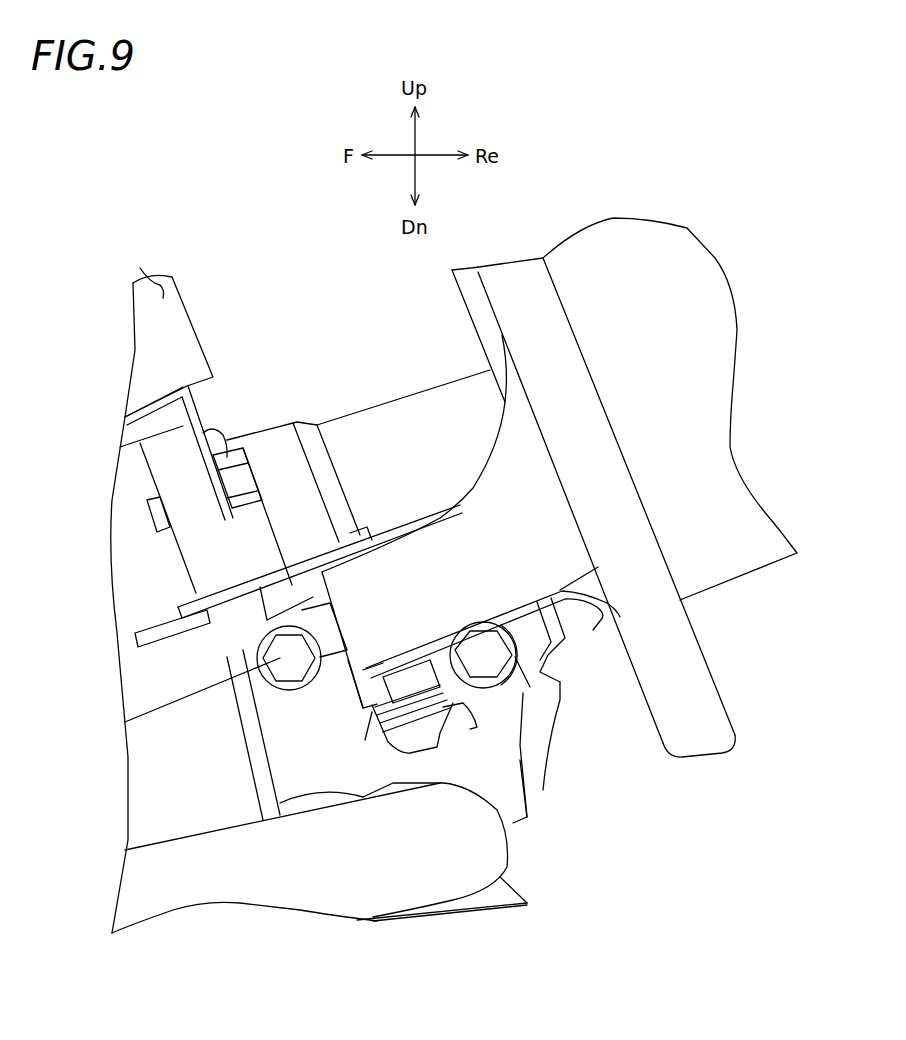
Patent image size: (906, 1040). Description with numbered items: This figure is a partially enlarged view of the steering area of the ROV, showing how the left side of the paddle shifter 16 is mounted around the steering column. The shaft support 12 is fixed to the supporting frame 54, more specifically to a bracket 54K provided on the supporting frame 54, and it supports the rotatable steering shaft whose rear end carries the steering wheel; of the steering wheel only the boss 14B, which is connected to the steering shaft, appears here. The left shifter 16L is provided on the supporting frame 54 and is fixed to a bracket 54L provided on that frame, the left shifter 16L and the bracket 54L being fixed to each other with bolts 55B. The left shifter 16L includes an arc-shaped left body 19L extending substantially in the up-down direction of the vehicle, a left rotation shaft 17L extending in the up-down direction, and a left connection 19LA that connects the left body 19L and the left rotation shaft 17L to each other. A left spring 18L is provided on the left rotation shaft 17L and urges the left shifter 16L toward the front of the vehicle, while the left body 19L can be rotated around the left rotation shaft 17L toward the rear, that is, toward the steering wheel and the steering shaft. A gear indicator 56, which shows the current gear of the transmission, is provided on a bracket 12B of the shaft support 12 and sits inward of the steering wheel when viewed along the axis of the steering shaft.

The shaft support 12 is at (370, 400).
The bracket 12B is at (147, 407).
The boss 14B is at (697, 273).
The paddle shifter 16 is at (630, 570).
The left shifter 16L is at (630, 570).
The left rotation shaft 17L is at (365, 740).
The left spring 18L is at (420, 710).
The left body 19L is at (680, 637).
The left connection 19LA is at (418, 577).
The supporting frame 54 is at (340, 890).
The bracket 54K is at (527, 817).
The bracket 54L is at (415, 773).
The bolts 55B is at (488, 652).
The gear indicator 56 is at (160, 297).